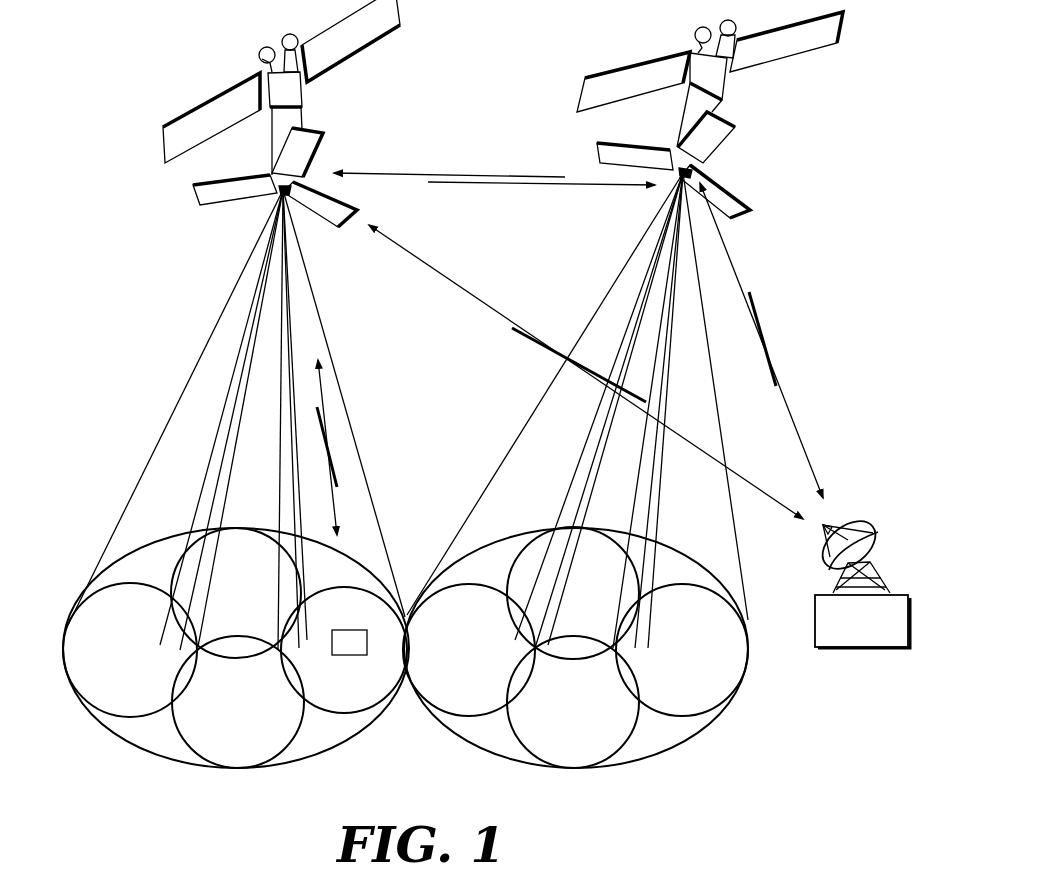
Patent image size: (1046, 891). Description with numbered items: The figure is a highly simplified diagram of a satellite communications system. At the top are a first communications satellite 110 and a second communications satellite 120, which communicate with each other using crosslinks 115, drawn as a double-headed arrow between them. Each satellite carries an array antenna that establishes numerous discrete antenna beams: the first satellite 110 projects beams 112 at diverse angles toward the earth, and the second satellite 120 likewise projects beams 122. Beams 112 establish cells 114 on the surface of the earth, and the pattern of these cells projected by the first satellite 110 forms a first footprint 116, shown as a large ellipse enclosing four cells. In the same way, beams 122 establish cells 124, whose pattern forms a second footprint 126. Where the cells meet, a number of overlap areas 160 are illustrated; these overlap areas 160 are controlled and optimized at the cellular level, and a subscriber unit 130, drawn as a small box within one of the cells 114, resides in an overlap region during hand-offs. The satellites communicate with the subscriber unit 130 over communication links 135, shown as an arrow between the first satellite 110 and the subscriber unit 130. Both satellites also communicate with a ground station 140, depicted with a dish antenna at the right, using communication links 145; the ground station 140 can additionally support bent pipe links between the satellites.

The first communications satellite 110 is at (302, 102).
The second communications satellite 120 is at (730, 82).
The antenna beams 112 is at (190, 375).
The antenna beams 122 is at (533, 417).
The cells 114 is at (258, 582).
The cells 124 is at (602, 589).
The first footprint 116 is at (133, 747).
The second footprint 126 is at (702, 733).
The overlap areas 160 is at (183, 613).
The subscriber unit 130 is at (343, 628).
The communication links 135 is at (328, 420).
The crosslinks 115 is at (445, 173).
The communication links 145 is at (467, 290).
The ground station 140 is at (853, 652).